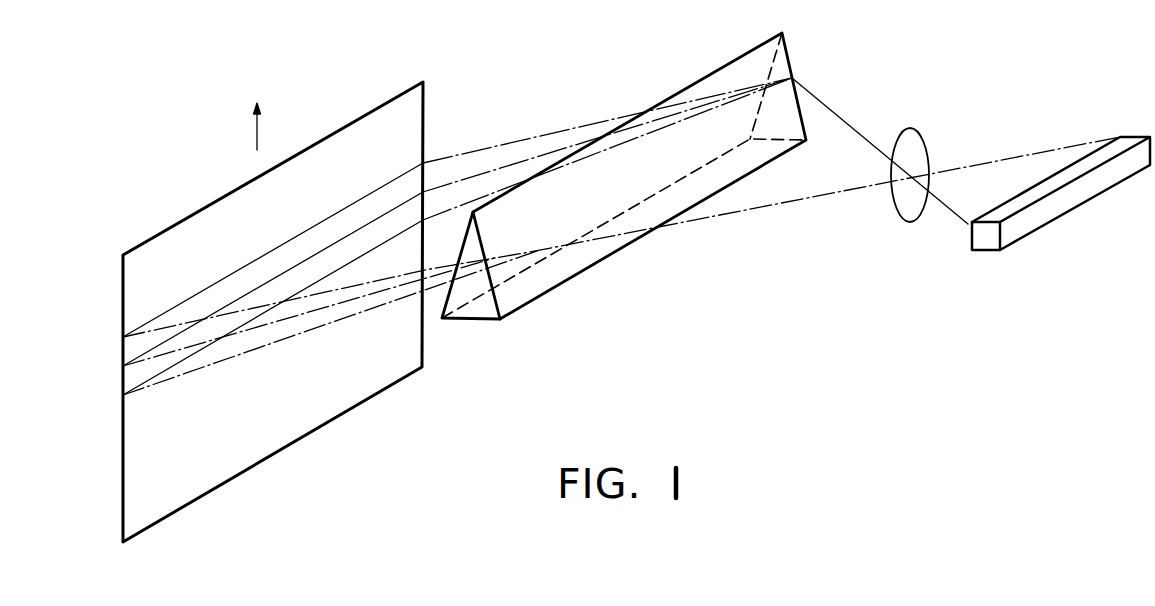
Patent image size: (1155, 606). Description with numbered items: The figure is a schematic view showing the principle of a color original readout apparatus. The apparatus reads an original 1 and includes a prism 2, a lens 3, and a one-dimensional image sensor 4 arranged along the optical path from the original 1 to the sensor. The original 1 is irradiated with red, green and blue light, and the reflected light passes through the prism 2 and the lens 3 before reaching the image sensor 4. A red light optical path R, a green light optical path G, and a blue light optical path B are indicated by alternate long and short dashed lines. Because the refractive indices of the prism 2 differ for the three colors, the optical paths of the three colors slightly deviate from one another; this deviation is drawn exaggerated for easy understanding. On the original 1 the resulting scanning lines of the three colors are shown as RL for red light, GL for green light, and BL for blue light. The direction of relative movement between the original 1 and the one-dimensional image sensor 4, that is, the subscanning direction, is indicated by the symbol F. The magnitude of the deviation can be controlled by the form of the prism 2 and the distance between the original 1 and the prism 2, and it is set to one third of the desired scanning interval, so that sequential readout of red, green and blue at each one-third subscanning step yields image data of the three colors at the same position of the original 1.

The original 1 is at (392, 98).
The prism 2 is at (740, 56).
The lens 3 is at (924, 136).
The one-dimensional image sensor 4 is at (1133, 137).
The subscanning direction F is at (257, 115).
The red light optical path R is at (545, 133).
The green light optical path G is at (464, 180).
The blue light optical path B is at (460, 207).
The red light scanning line RL is at (257, 257).
The green light scanning line GL is at (332, 245).
The blue light scanning line BL is at (358, 256).